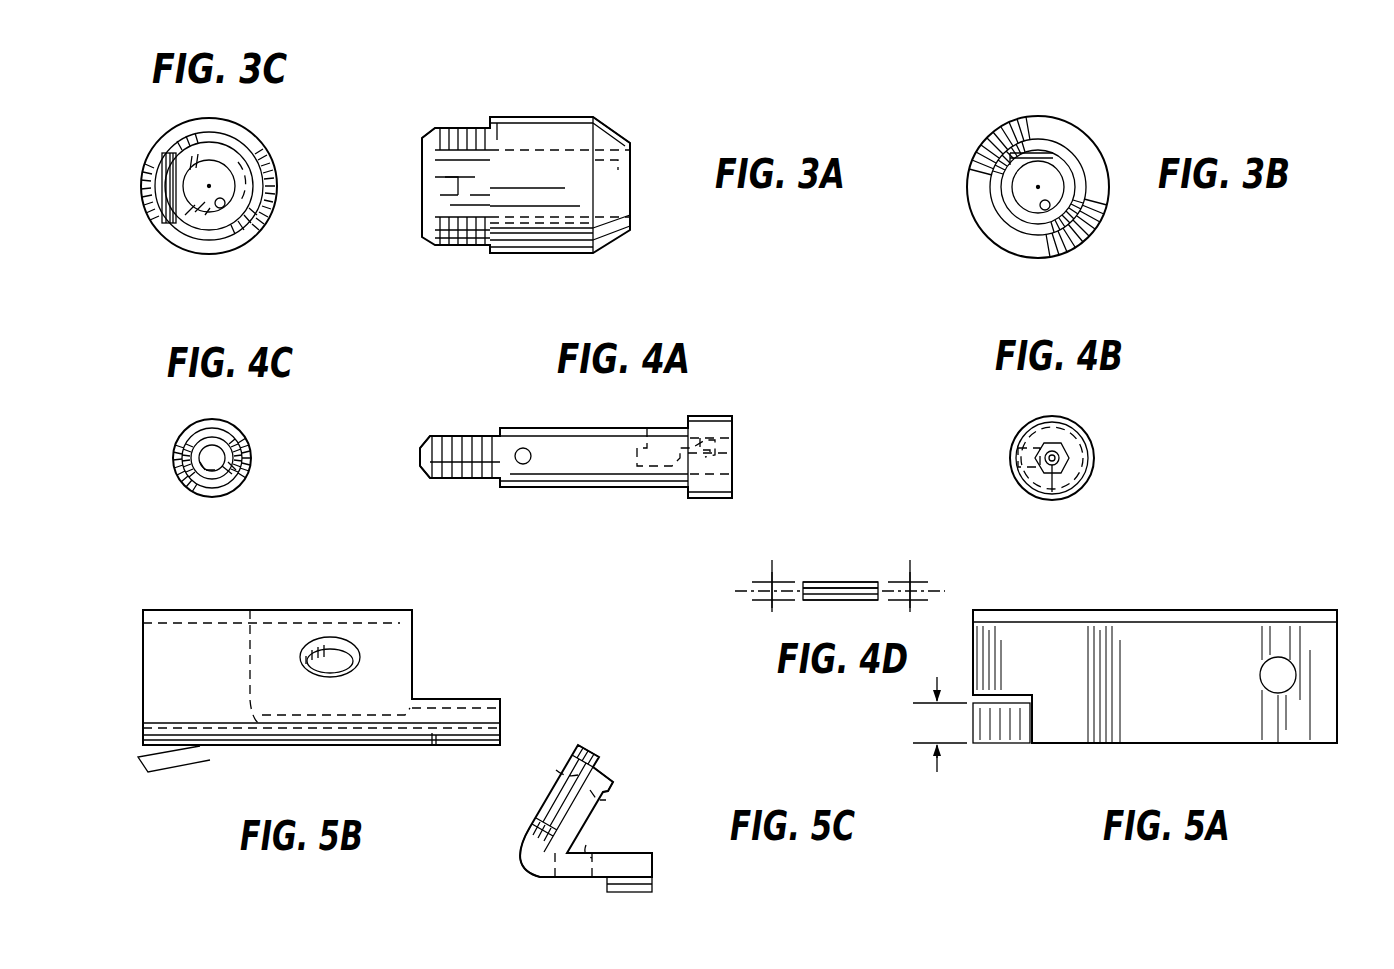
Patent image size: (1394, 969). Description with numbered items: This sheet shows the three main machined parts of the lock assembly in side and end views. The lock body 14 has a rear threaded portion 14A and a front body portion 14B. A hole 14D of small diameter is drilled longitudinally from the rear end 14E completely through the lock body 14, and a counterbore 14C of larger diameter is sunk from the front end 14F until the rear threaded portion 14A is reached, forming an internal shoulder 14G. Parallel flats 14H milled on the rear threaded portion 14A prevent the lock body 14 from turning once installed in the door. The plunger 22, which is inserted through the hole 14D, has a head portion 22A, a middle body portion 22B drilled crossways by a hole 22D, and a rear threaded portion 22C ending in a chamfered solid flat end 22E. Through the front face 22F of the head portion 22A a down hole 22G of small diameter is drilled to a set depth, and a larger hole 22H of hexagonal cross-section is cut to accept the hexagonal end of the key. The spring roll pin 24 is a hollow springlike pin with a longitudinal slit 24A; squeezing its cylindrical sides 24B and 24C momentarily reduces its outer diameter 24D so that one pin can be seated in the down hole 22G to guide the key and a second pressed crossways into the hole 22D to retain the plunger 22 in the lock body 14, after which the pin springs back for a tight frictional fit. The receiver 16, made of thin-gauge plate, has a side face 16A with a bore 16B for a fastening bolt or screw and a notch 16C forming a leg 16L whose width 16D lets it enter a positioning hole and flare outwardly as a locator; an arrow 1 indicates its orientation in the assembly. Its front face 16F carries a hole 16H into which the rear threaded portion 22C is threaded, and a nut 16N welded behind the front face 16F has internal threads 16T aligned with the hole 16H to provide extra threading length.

In FIG. 5B, the arrow 1 is at (281, 602).
In FIG. 3C, the lock body 14 is at (288, 177).
In FIG. 3A, the lock body 14 is at (542, 92).
In FIG. 3B, the lock body 14 is at (1100, 147).
In FIG. 3C, the rear threaded portion 14A is at (258, 140).
In FIG. 3A, the rear threaded portion 14A is at (452, 128).
In FIG. 3A, the front body portion 14B is at (612, 130).
In FIG. 3B, the front body portion 14B is at (1062, 133).
In FIG. 3C, the counterbore 14C is at (162, 243).
In FIG. 3A, the counterbore 14C is at (640, 162).
In FIG. 3B, the counterbore 14C is at (1007, 188).
In FIG. 3C, the hole 14D is at (220, 208).
In FIG. 3A, the hole 14D is at (432, 183).
In FIG. 3B, the hole 14D is at (1045, 207).
In FIG. 3C, the rear end 14E is at (223, 153).
In FIG. 3A, the rear end 14E is at (432, 143).
In FIG. 3A, the front end 14F is at (633, 145).
In FIG. 3B, the front end 14F is at (1028, 143).
In FIG. 3C, the internal shoulder 14G is at (192, 248).
In FIG. 3A, the internal shoulder 14G is at (500, 120).
In FIG. 3B, the internal shoulder 14G is at (1018, 210).
In FIG. 3C, the flats 14H is at (158, 210).
In FIG. 5B, the receiver 16 is at (173, 608).
In FIG. 5C, the receiver 16 is at (612, 728).
In FIG. 5A, the receiver 16 is at (1155, 588).
In FIG. 5B, the side face 16A is at (365, 737).
In FIG. 5C, the side face 16A is at (537, 880).
In FIG. 5A, the side face 16A is at (1322, 640).
In FIG. 5B, the bore 16B is at (435, 745).
In FIG. 5C, the bore 16B is at (602, 842).
In FIG. 5A, the bore 16B is at (1275, 662).
In FIG. 5A, the notch 16C is at (1018, 690).
In FIG. 5A, the width 16D is at (940, 724).
In FIG. 5B, the front face 16F is at (200, 637).
In FIG. 5C, the front face 16F is at (580, 745).
In FIG. 5B, the hole 16H is at (337, 647).
In FIG. 5C, the hole 16H is at (556, 770).
In FIG. 5B, the leg 16L is at (175, 748).
In FIG. 5C, the leg 16L is at (650, 880).
In FIG. 5A, the leg 16L is at (998, 732).
In FIG. 5C, the nut 16N is at (612, 784).
In FIG. 5C, the internal threads 16T is at (613, 808).
In FIG. 4C, the plunger 22 is at (253, 442).
In FIG. 4A, the plunger 22 is at (720, 393).
In FIG. 4B, the plunger 22 is at (1092, 477).
In FIG. 4C, the head portion 22A is at (233, 425).
In FIG. 4A, the head portion 22A is at (733, 425).
In FIG. 4B, the head portion 22A is at (1090, 450).
In FIG. 4C, the middle body portion 22B is at (208, 432).
In FIG. 4A, the middle body portion 22B is at (582, 428).
In FIG. 4B, the middle body portion 22B is at (1083, 438).
In FIG. 4C, the rear threaded portion 22C is at (190, 457).
In FIG. 4A, the rear threaded portion 22C is at (463, 437).
In FIG. 4C, the hole 22D is at (245, 478).
In FIG. 4A, the hole 22D is at (523, 448).
In FIG. 4C, the solid flat end 22E is at (190, 487).
In FIG. 4A, the solid flat end 22E is at (423, 445).
In FIG. 4A, the front face 22F is at (733, 438).
In FIG. 4B, the front face 22F is at (1055, 440).
In FIG. 4A, the down hole 22G is at (648, 448).
In FIG. 4B, the down hole 22G is at (1058, 490).
In FIG. 4A, the hole 22H is at (733, 453).
In FIG. 4B, the hole 22H is at (1040, 445).
In FIG. 4B, the spring roll pin 24 is at (1023, 457).
In FIG. 4D, the spring roll pin 24 is at (800, 612).
In FIG. 4D, the slit 24A is at (853, 582).
In FIG. 4D, the cylindrical side 24B is at (822, 582).
In FIG. 4D, the cylindrical side 24C is at (842, 600).
In FIG. 4D, the outer diameter 24D is at (768, 588).